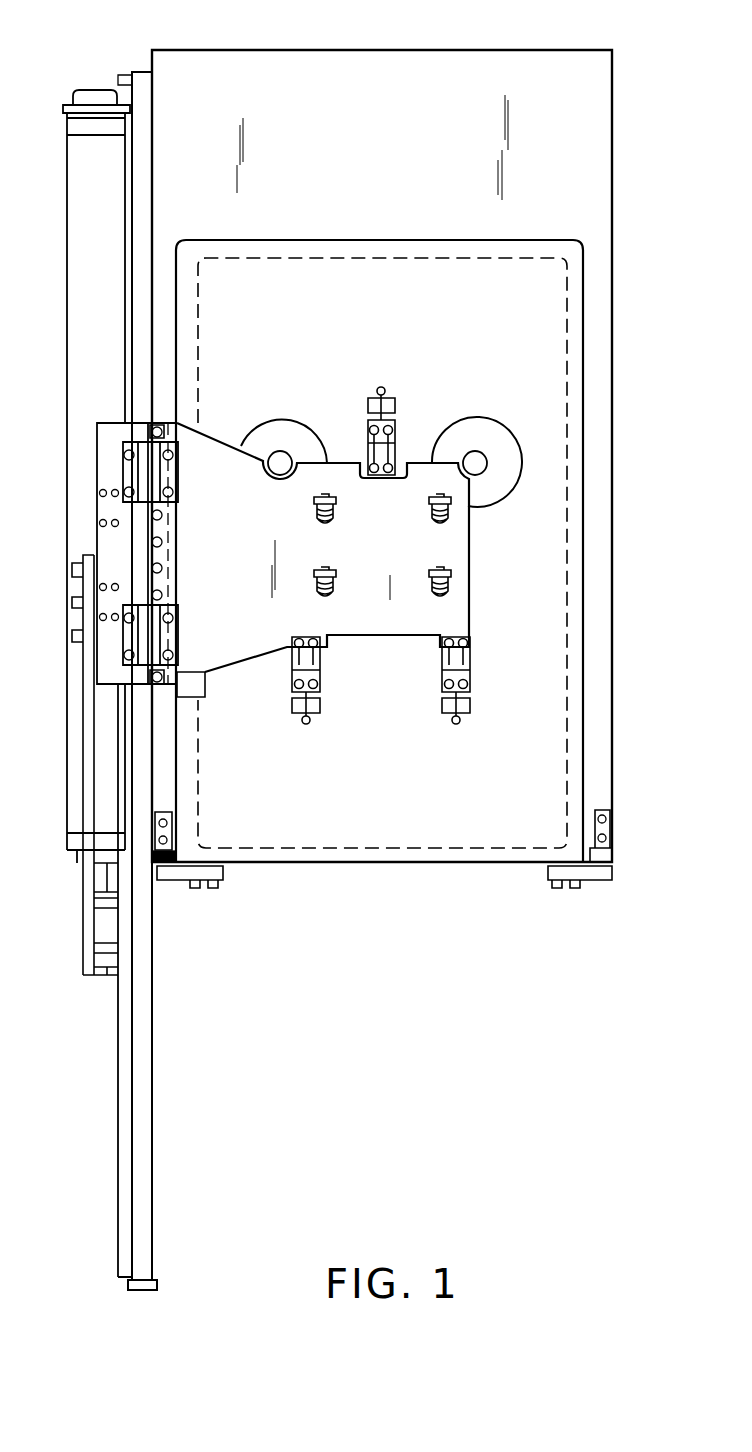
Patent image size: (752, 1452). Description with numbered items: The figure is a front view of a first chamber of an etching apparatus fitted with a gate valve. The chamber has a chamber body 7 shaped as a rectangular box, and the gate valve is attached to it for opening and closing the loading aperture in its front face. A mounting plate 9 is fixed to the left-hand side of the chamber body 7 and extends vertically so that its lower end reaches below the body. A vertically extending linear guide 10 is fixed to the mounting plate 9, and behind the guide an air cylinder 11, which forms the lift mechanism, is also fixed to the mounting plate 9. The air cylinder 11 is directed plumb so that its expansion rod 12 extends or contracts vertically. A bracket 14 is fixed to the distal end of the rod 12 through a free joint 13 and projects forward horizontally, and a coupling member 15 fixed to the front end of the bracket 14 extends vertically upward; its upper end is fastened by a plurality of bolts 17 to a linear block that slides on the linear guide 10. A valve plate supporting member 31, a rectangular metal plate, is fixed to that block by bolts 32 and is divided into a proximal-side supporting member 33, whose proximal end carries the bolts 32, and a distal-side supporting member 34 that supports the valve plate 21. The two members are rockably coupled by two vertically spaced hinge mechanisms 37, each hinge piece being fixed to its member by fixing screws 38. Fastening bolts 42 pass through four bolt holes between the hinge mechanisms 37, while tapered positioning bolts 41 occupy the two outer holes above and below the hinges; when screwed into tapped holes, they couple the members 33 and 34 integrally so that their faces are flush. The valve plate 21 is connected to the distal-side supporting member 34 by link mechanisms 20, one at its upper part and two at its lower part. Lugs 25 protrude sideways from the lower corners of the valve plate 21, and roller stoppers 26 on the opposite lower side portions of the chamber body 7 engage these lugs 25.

The chamber body 7 is at (612, 145).
The mounting plate 9 is at (138, 188).
The linear guide 10 is at (553, 47).
The air cylinder 11 is at (83, 245).
The expansion rod 12 is at (100, 876).
The free joint 13 is at (102, 930).
The bracket 14 is at (113, 978).
The coupling member 15 is at (94, 920).
The bolts 17 is at (72, 634).
The link mechanisms 20 is at (403, 423).
The valve plate 21 is at (547, 323).
The lugs 25 is at (175, 880).
The roller stoppers 26 is at (173, 858).
The valve plate supporting member 31 is at (472, 547).
The bolts 32 is at (97, 522).
The proximal-side supporting member 33 is at (97, 445).
The distal-side supporting member 34 is at (453, 605).
The hinge mechanisms 37 is at (180, 462).
The fixing screws 38 is at (172, 493).
The positioning bolts 41 is at (152, 430).
The fastening bolts 42 is at (158, 568).